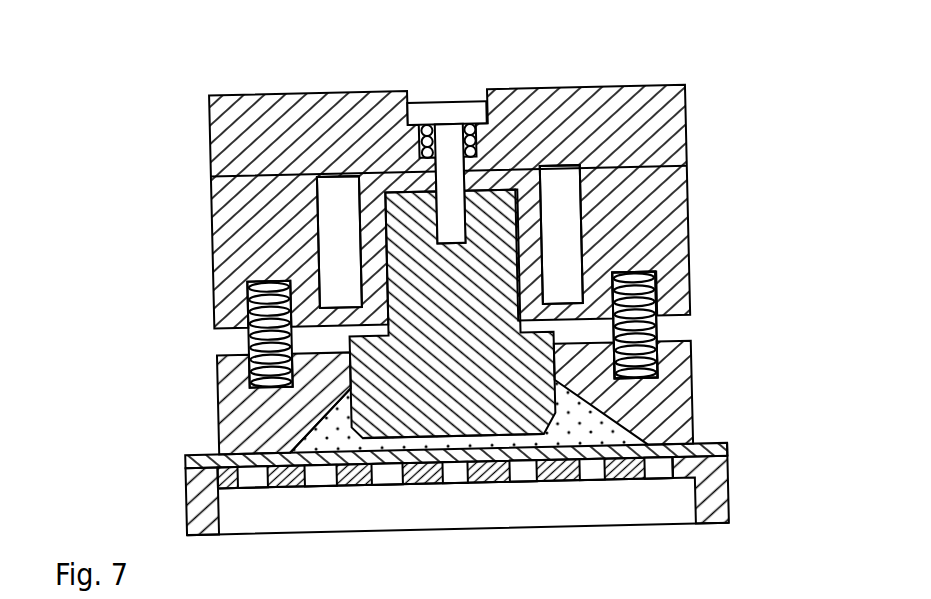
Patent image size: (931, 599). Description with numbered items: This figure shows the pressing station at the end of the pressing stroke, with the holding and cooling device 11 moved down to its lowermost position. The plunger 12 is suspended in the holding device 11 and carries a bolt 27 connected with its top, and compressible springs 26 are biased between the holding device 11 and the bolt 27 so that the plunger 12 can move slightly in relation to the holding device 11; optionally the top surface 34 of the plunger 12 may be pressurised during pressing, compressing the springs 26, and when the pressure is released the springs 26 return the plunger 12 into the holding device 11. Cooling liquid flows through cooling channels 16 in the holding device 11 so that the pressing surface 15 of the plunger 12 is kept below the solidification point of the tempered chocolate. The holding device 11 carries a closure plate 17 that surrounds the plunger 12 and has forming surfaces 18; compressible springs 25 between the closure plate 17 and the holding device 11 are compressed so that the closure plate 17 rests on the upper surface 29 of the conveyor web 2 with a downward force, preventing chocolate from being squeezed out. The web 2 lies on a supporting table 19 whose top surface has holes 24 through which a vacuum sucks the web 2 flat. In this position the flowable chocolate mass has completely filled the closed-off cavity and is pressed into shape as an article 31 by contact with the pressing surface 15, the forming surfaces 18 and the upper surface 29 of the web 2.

The conveyor web 2 is at (724, 454).
The holding and cooling device 11 is at (656, 128).
The plunger 12 is at (660, 306).
The pressing surface 15 is at (510, 431).
The cooling channel 16 is at (342, 234).
The closure plate 17 is at (675, 405).
The forming surface 18 is at (286, 416).
The supporting table 19 is at (706, 503).
The holes 24 is at (516, 471).
The compressible springs 25 is at (249, 335).
The compressible springs 26 is at (491, 128).
The bolt 27 is at (450, 150).
The upper surface of the web 29 is at (705, 446).
The article 31 is at (325, 424).
The top surface of the plunger 34 is at (404, 188).